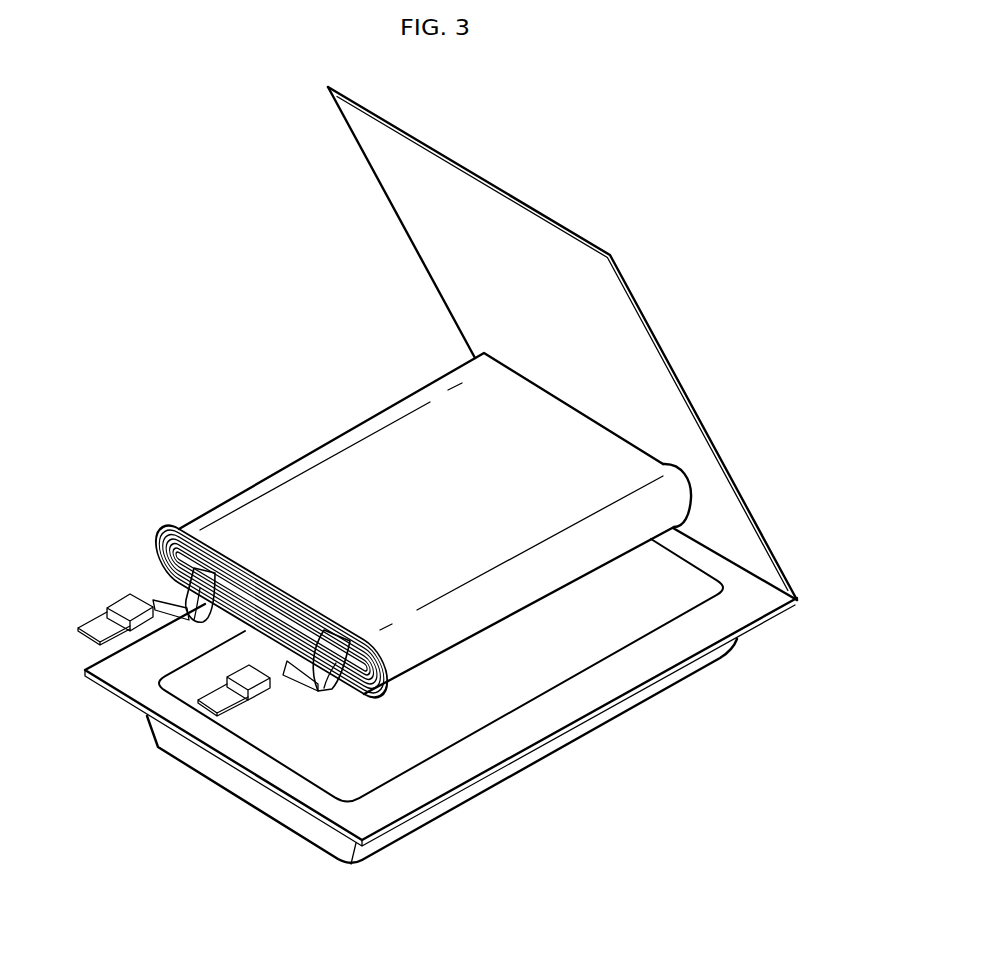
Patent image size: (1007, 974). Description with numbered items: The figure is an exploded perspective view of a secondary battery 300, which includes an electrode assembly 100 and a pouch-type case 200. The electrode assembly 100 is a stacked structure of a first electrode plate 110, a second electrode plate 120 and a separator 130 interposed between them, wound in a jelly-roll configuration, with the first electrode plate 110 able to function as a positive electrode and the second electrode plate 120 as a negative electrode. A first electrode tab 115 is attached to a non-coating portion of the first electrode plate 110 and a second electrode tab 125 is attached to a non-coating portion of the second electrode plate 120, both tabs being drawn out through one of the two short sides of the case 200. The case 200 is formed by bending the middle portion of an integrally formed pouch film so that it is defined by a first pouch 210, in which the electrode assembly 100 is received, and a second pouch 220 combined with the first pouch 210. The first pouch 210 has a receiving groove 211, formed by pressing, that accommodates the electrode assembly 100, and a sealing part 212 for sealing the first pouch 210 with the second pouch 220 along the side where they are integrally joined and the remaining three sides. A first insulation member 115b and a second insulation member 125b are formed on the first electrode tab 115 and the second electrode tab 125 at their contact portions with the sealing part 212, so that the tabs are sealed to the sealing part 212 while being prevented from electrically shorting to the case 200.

The secondary battery 300 is at (117, 89).
The electrode assembly 100 is at (235, 442).
The first electrode plate 110 is at (163, 533).
The second electrode plate 120 is at (165, 557).
The separator 130 is at (163, 540).
The first electrode tab 115 is at (202, 600).
The first insulation member 115b is at (127, 600).
The second electrode tab 125 is at (332, 695).
The second insulation member 125b is at (258, 684).
The case 200 is at (658, 327).
The first pouch 210 is at (772, 617).
The receiving groove 211 is at (474, 713).
The sealing part 212 is at (620, 672).
The second pouch 220 is at (778, 552).